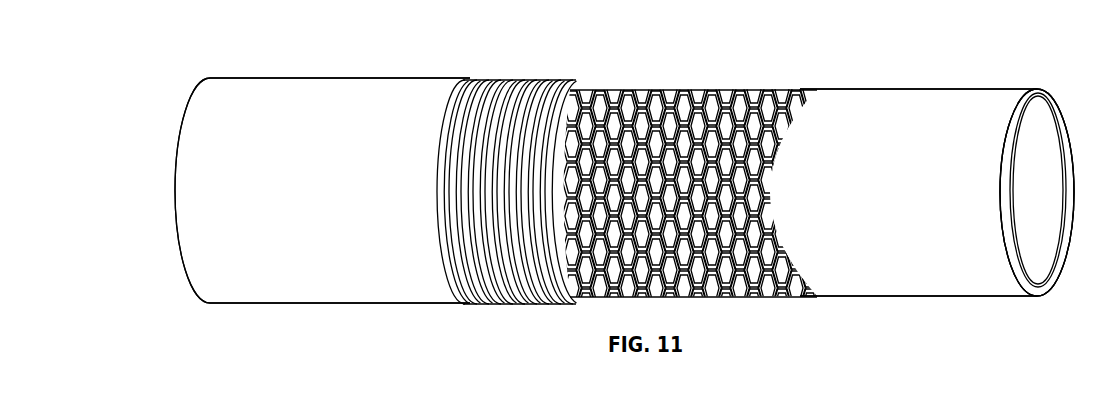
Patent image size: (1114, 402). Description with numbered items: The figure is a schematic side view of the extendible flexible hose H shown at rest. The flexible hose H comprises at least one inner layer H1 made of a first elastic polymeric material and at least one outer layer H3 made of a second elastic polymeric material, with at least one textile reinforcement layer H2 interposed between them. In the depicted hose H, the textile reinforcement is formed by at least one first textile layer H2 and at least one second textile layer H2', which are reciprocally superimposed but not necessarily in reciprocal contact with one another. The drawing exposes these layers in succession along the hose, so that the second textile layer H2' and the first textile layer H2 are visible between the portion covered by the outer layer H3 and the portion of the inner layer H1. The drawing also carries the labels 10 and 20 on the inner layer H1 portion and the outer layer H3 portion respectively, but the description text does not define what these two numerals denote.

The flexible hose H is at (190, 77).
The inner layer H1 is at (969, 79).
The first textile layer H2 is at (698, 176).
The second textile layer H2' is at (507, 167).
The outer layer H3 is at (338, 74).
The inner tube 10 is at (909, 198).
The outer cover 20 is at (314, 185).